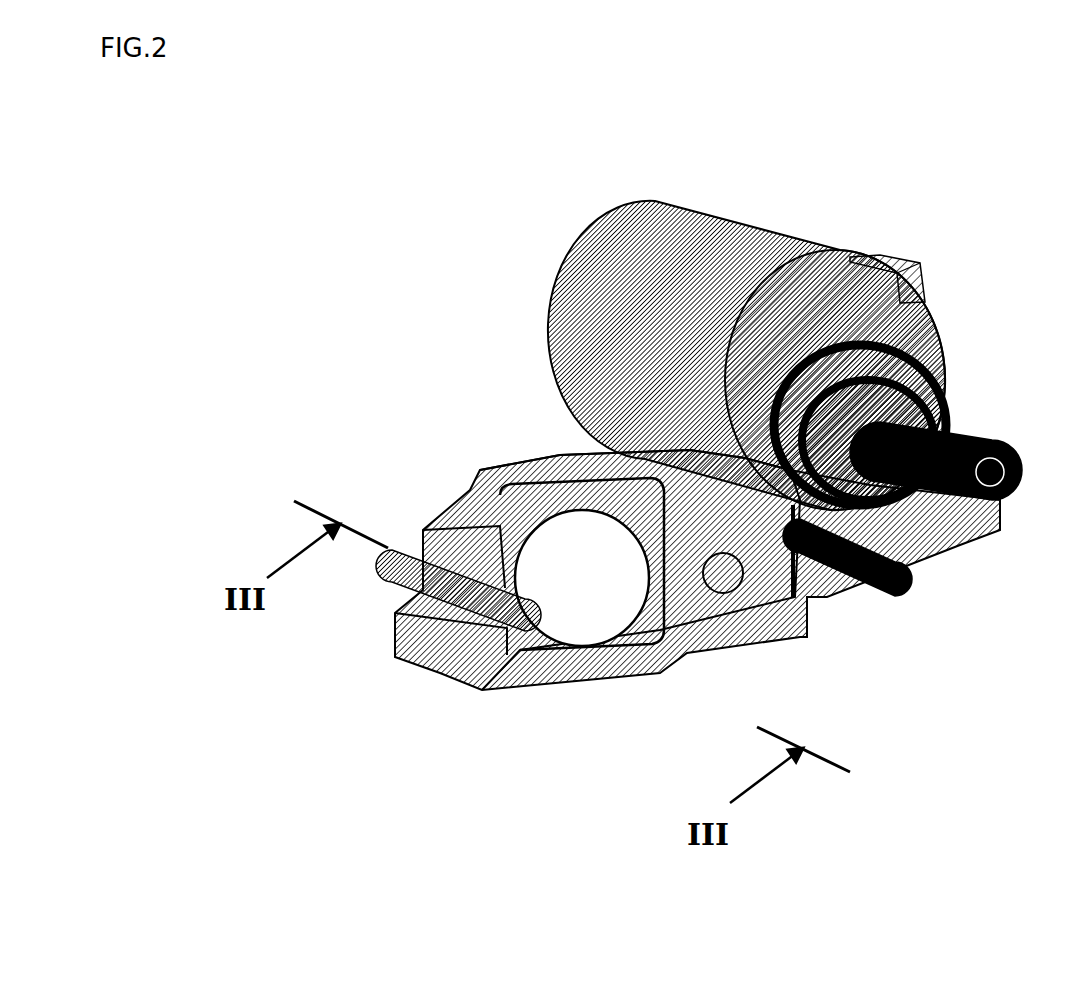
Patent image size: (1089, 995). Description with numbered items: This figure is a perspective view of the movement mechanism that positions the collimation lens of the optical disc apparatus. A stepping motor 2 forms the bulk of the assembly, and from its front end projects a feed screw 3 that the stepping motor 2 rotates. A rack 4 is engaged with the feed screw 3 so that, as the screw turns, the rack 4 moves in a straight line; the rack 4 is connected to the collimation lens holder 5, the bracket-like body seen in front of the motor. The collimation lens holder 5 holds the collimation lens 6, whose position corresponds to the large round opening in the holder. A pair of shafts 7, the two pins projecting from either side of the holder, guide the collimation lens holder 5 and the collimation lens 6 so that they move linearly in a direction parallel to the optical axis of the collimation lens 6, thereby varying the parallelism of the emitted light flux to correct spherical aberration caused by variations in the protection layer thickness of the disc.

The stepping motor 2 is at (753, 213).
The feed screw 3 is at (1002, 437).
The rack 4 is at (948, 384).
The collimation lens holder 5 is at (490, 468).
The collimation lens 6 is at (567, 610).
The pair of shafts 7 is at (486, 690).